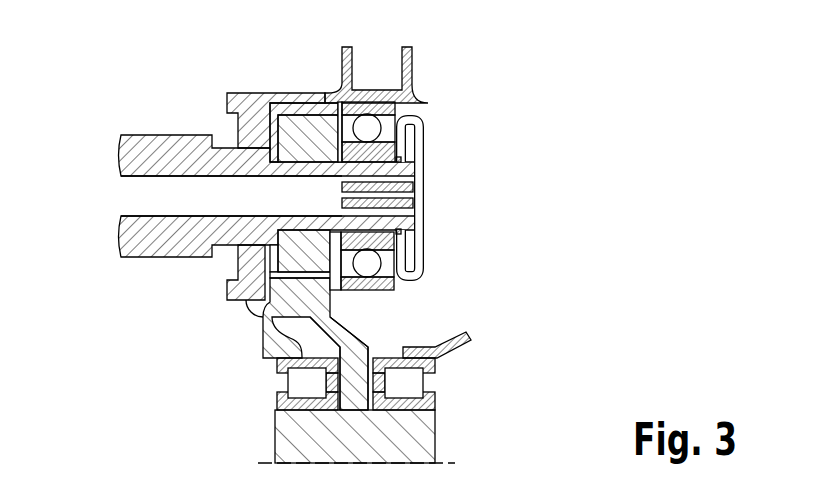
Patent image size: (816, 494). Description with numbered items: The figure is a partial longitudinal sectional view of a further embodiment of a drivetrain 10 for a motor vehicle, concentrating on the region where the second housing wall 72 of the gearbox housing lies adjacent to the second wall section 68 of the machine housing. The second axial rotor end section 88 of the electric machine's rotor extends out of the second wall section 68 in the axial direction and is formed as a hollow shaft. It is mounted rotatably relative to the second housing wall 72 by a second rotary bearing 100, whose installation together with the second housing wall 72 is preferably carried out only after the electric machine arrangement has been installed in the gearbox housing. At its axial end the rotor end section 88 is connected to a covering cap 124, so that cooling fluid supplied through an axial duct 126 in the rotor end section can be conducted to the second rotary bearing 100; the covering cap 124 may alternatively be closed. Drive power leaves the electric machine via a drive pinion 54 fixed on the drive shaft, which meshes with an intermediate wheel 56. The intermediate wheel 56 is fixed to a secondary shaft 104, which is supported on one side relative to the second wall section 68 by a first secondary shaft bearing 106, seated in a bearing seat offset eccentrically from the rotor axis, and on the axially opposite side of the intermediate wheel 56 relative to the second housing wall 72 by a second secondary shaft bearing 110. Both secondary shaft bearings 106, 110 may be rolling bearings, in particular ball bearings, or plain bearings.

The drivetrain 10 is at (534, 80).
The drive pinion 54 is at (238, 272).
The intermediate wheel 56 is at (343, 335).
The second wall section 68 is at (340, 66).
The second housing wall 72 is at (413, 62).
The second axial rotor end section 88 is at (307, 223).
The second rotary bearing 100 is at (392, 125).
The secondary shaft 104 is at (423, 440).
The first secondary shaft bearing 106 is at (297, 383).
The second secondary shaft bearing 110 is at (410, 387).
The covering cap 124 is at (424, 167).
The axial duct 126 is at (142, 186).